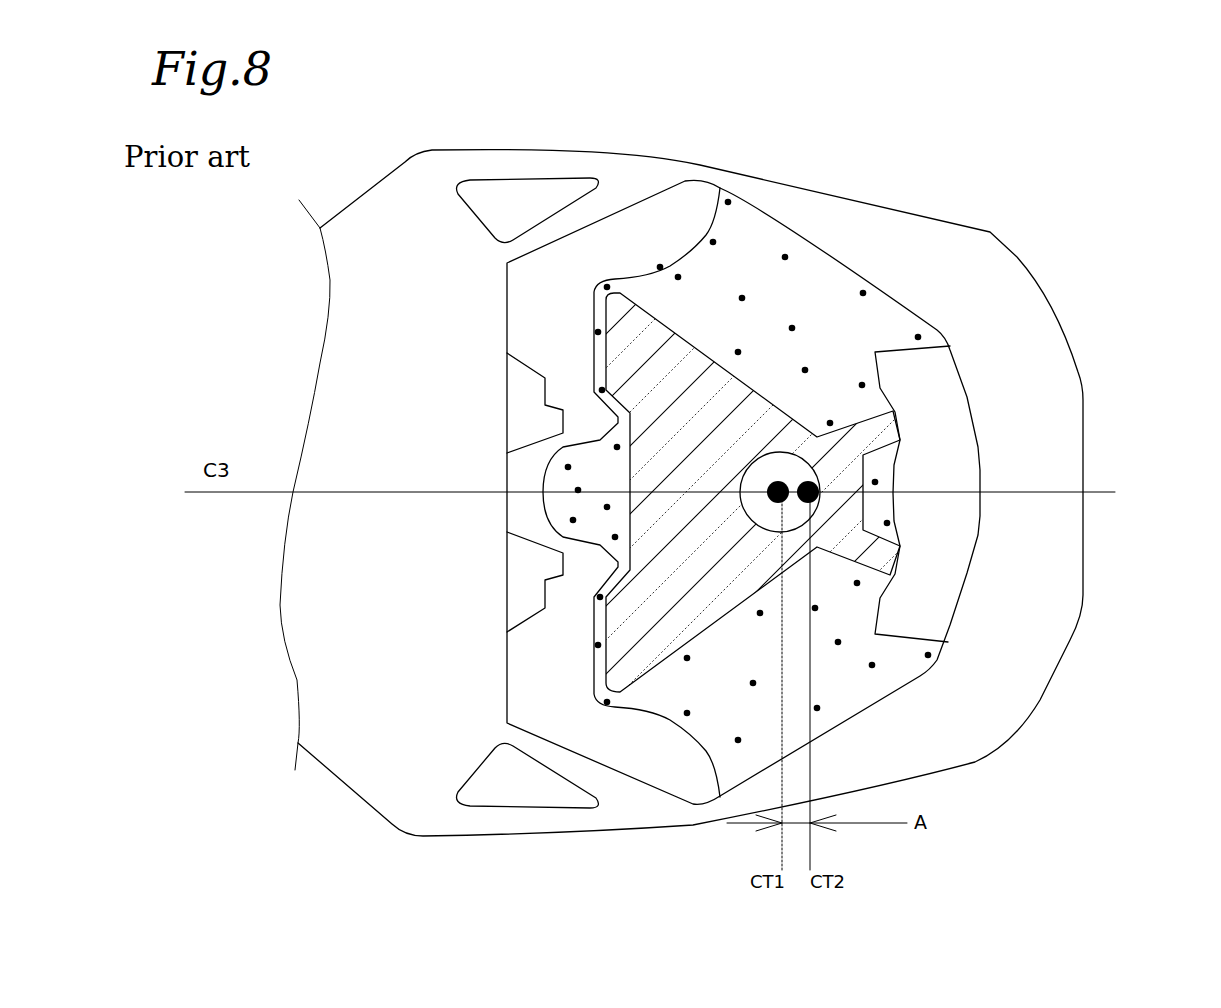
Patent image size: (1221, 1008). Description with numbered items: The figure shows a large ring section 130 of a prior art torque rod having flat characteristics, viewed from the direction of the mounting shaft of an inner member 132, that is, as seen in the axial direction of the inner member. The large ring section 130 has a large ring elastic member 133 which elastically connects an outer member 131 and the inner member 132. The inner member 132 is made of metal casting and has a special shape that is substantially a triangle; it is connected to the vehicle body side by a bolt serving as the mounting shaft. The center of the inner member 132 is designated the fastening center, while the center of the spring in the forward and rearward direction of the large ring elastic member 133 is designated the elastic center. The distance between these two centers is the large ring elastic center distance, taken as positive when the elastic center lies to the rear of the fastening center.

The large ring section 130 is at (730, 483).
The outer member 131 is at (681, 493).
The inner member 132 is at (705, 387).
The large ring elastic member 133 is at (838, 318).